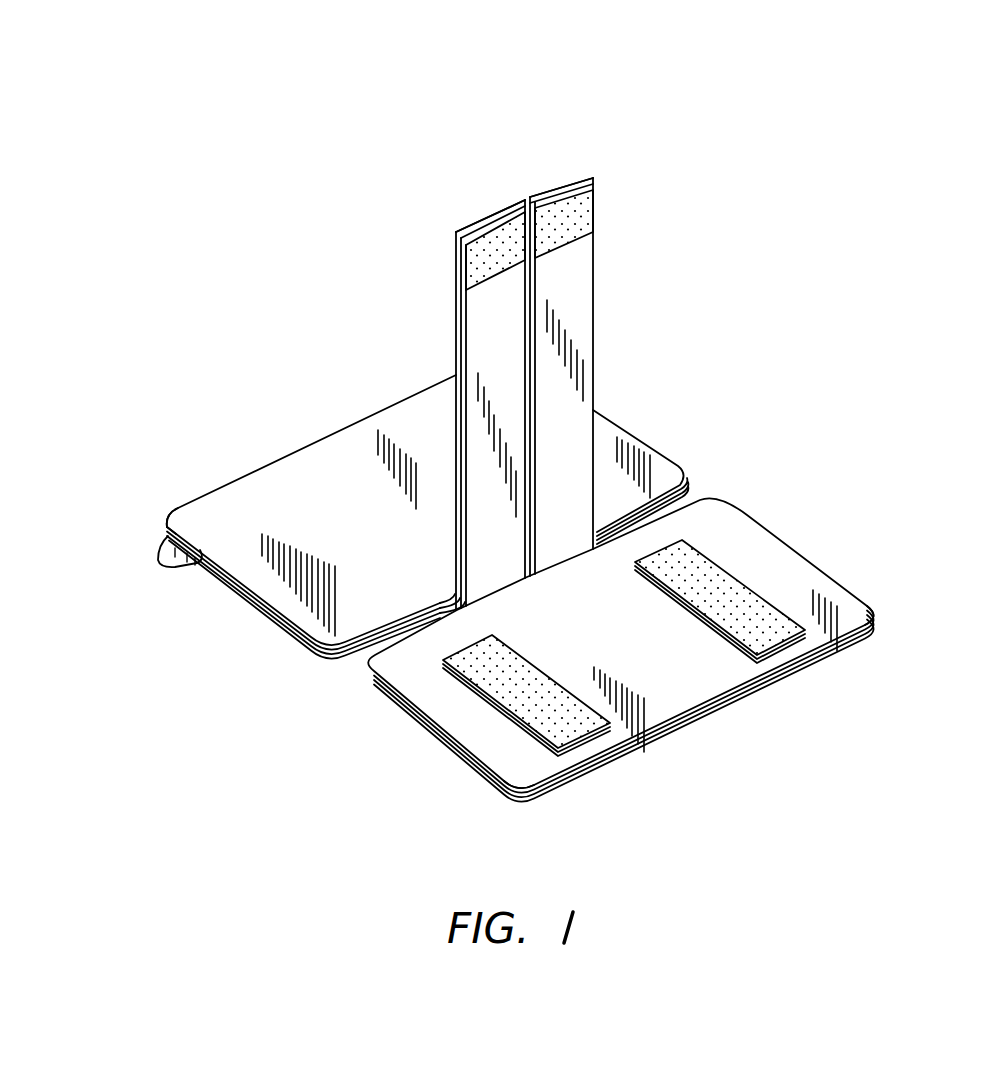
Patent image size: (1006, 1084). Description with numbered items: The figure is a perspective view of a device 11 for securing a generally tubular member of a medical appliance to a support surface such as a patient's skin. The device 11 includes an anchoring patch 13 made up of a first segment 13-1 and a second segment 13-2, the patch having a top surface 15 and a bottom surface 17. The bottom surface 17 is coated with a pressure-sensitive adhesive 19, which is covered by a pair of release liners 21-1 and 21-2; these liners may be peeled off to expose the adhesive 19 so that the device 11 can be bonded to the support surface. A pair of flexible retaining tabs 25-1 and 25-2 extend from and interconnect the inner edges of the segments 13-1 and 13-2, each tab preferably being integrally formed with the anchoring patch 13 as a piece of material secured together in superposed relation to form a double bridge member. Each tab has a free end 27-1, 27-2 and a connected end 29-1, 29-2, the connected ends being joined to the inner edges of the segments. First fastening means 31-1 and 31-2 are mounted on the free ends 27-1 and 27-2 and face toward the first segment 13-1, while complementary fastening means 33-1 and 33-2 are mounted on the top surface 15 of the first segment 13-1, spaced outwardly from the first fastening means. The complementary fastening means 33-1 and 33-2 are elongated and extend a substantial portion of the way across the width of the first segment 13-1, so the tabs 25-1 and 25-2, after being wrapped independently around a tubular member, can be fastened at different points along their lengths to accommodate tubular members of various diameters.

The device 11 is at (797, 203).
The anchoring patch 13 is at (363, 664).
The first segment 13-1 is at (823, 570).
The second segment 13-2 is at (291, 453).
The top surface 15 is at (867, 619).
The bottom surface 17 is at (168, 536).
The pressure-sensitive adhesive 19 is at (160, 543).
The release liner 21-1 is at (500, 786).
The release liner 21-2 is at (190, 572).
The flexible retaining tab 25-1 is at (430, 375).
The flexible retaining tab 25-2 is at (628, 340).
The free end 27-1 is at (466, 217).
The free end 27-2 is at (574, 171).
The connected end 29-1 is at (495, 568).
The connected end 29-2 is at (567, 527).
The first fastening means 31-1 is at (500, 243).
The first fastening means 31-2 is at (548, 226).
The complementary fastening means 33-1 is at (500, 657).
The complementary fastening means 33-2 is at (730, 614).